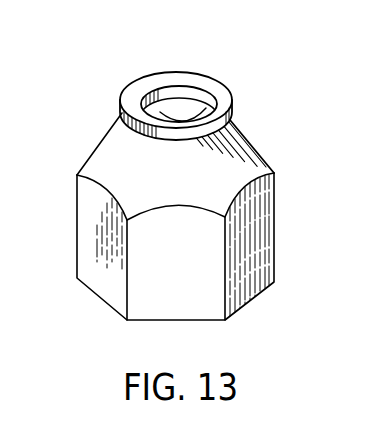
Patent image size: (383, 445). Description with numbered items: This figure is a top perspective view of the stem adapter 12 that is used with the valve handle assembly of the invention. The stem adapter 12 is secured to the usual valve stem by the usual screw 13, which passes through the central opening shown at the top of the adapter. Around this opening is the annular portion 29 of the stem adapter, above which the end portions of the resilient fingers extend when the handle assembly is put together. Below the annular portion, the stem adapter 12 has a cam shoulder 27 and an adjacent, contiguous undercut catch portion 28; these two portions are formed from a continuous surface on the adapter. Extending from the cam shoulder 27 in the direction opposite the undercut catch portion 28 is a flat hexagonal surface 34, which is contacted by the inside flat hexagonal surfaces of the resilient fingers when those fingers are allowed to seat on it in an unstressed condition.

The stem adapter 12 is at (256, 155).
The screw 13 is at (192, 112).
The cam shoulder 27 is at (102, 149).
The undercut catch portion 28 is at (122, 117).
The annular portion 29 is at (221, 93).
The flat hexagonal surface 34 is at (90, 231).